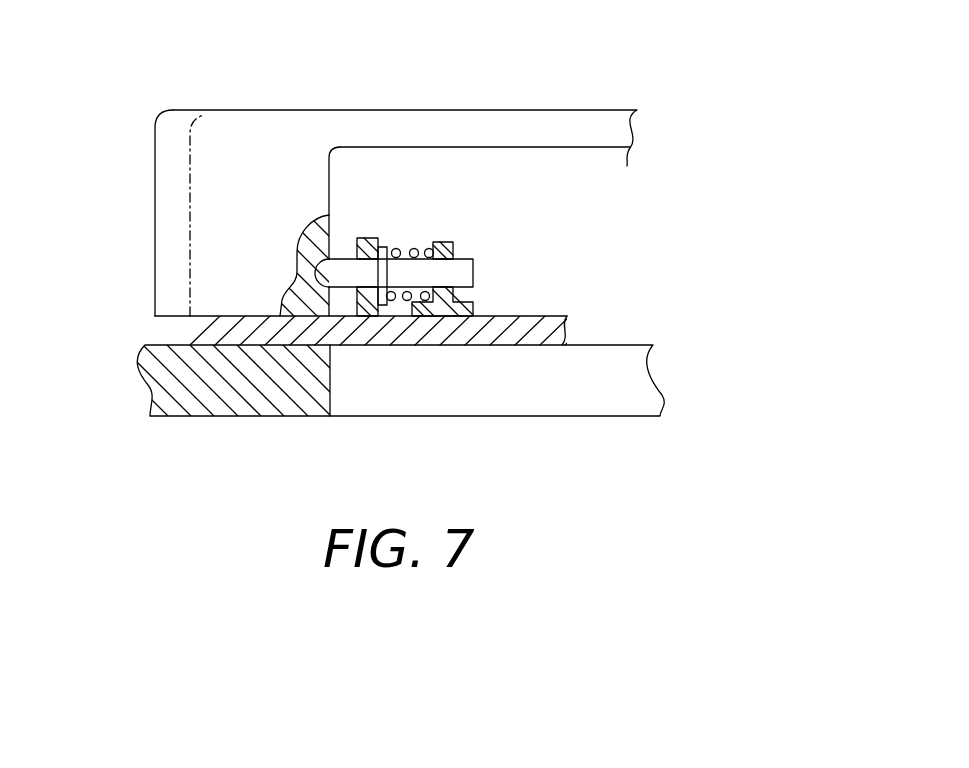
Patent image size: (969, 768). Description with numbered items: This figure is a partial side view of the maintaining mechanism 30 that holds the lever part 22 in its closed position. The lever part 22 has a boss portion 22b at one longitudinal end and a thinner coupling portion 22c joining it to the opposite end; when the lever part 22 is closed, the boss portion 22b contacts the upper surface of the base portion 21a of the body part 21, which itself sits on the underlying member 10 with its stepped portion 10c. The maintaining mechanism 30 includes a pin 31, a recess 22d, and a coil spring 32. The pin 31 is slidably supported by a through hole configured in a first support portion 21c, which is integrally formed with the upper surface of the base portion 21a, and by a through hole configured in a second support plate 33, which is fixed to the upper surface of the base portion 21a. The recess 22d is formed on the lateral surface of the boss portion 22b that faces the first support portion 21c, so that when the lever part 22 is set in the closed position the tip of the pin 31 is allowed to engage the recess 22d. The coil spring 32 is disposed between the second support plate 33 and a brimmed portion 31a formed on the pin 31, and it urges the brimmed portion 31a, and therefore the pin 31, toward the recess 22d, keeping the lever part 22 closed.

The base 10 is at (380, 434).
The step portion of base 10c is at (330, 383).
The body part 21 is at (381, 199).
The base portion 21a is at (550, 323).
The first support portion 21c is at (368, 240).
The lever part 22 is at (342, 194).
The boss portion 22b is at (168, 148).
The coupling portion 22c is at (402, 122).
The recess 22d is at (322, 283).
The maintaining mechanism 30 is at (447, 269).
The pin 31 is at (464, 276).
The brimmed portion 31a is at (418, 308).
The coil spring 32 is at (397, 252).
The second support plate 33 is at (446, 243).